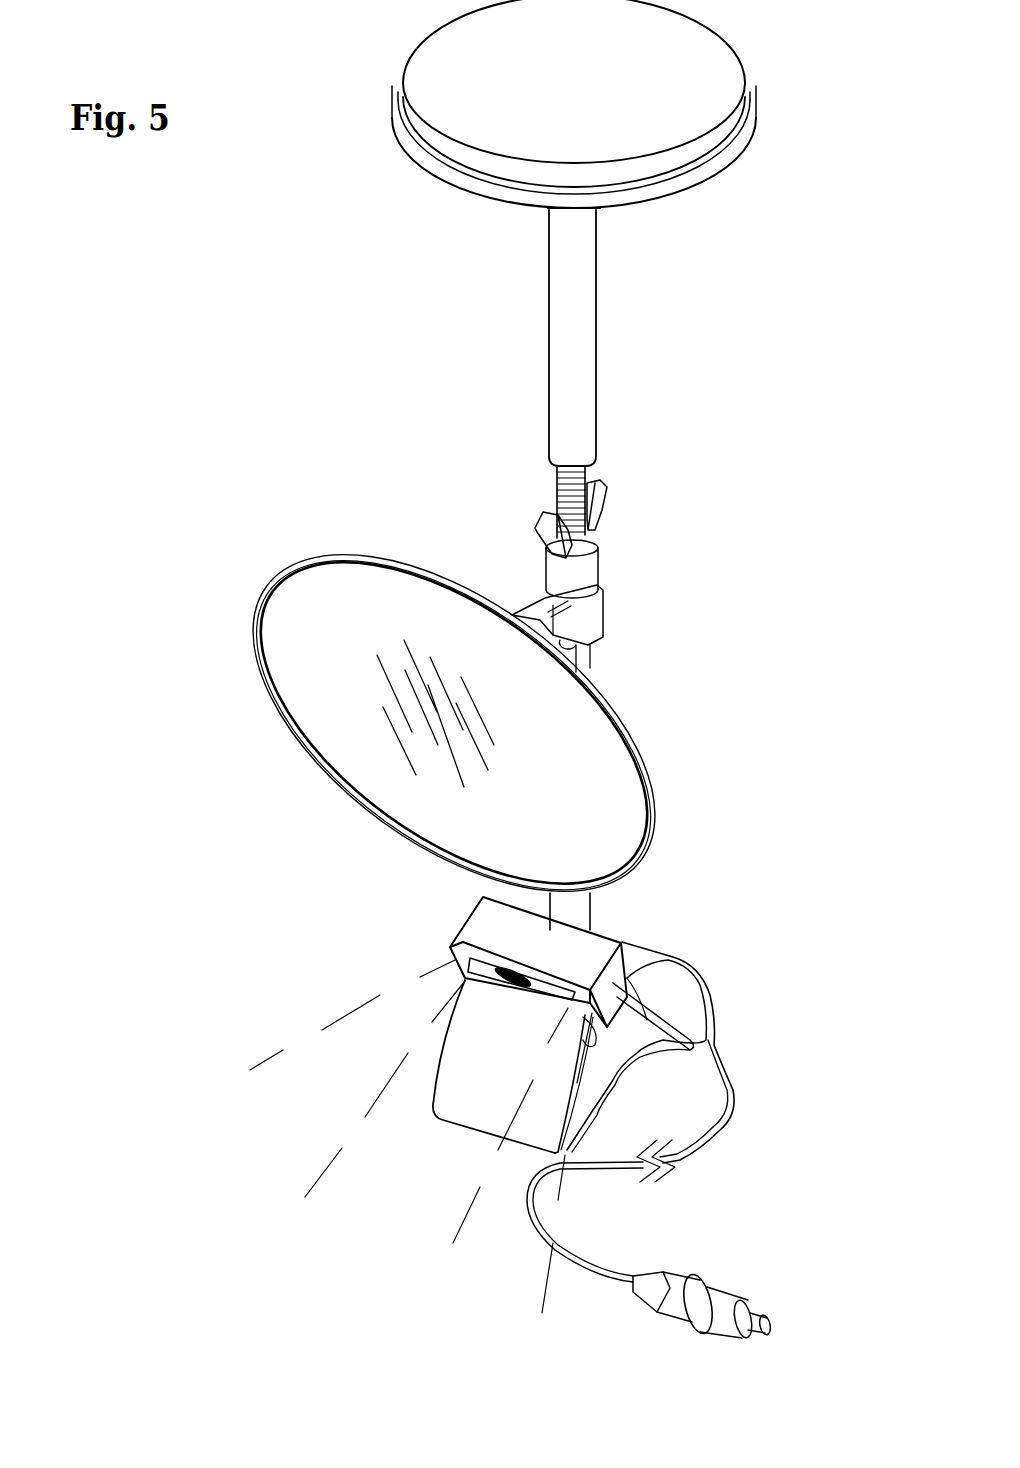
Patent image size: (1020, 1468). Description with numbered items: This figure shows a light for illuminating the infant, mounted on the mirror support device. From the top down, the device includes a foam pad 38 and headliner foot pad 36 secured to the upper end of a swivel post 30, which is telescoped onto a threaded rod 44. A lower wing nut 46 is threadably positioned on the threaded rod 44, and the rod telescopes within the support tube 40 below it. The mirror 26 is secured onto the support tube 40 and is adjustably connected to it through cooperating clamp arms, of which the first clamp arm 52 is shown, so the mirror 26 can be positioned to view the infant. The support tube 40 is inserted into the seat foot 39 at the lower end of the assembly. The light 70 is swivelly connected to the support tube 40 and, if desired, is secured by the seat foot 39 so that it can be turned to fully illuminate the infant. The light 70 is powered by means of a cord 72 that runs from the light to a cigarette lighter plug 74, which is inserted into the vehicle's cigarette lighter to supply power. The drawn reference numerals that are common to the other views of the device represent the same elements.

The mirror 26 is at (323, 720).
The swivel post 30 is at (569, 387).
The headliner foot pad 36 is at (432, 179).
The foam pad 38 is at (457, 68).
The seat foot 39 is at (470, 1088).
The support tube 40 is at (590, 910).
The threaded rod 44 is at (556, 494).
The lower wing nut 46 is at (607, 500).
The first clamp arm 52 is at (597, 620).
The light 70 is at (483, 921).
The cord 72 is at (737, 1076).
The cigarette lighter plug 74 is at (745, 1295).